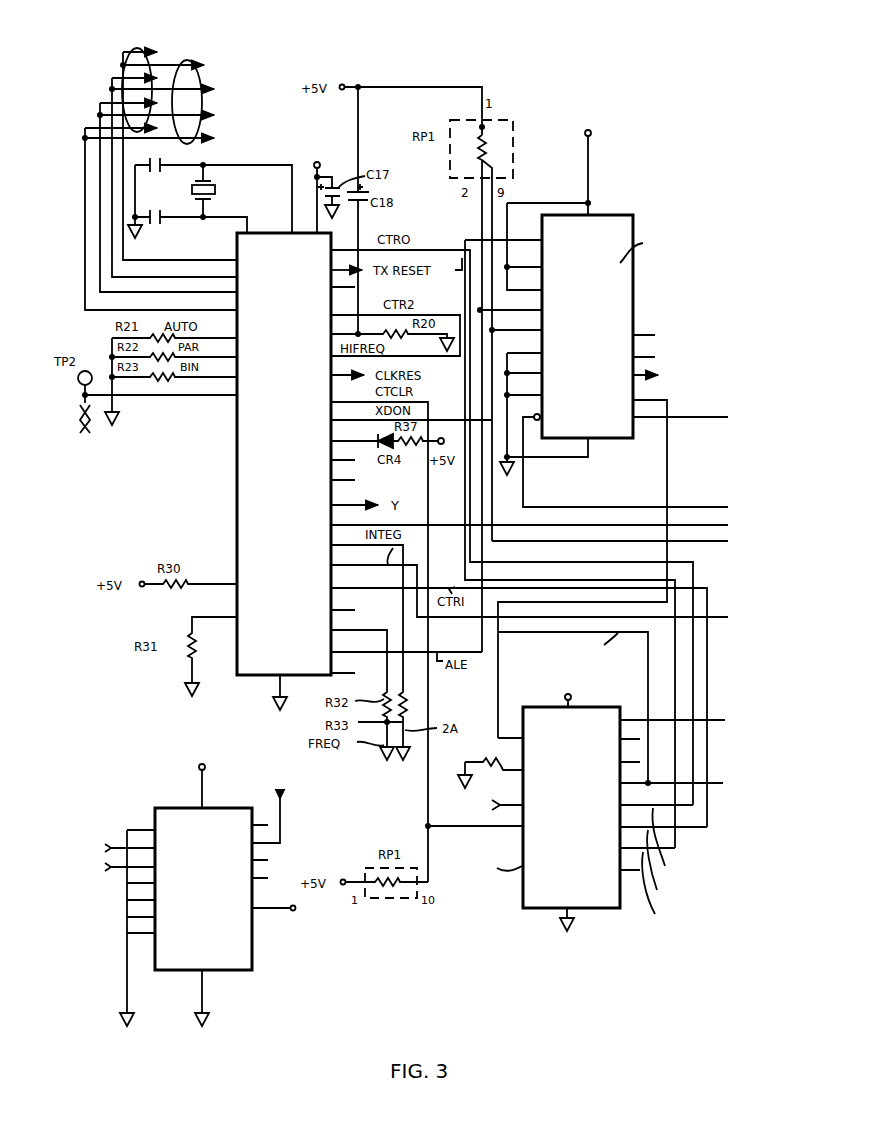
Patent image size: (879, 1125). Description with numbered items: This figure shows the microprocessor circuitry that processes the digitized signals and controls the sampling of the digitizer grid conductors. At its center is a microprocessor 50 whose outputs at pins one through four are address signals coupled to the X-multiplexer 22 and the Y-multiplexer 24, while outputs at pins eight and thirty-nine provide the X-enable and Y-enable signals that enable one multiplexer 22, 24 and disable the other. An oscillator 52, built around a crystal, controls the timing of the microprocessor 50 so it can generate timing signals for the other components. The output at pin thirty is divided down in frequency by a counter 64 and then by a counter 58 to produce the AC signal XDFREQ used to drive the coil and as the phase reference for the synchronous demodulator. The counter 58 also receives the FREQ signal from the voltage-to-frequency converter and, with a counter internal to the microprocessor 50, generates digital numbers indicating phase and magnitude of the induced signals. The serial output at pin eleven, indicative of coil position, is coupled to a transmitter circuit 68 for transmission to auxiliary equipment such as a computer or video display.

The X-multiplexer 22 is at (137, 48).
The Y-multiplexer 24 is at (187, 60).
The microprocessor 50 is at (291, 146).
The oscillator 52 is at (221, 148).
The counter 58 is at (492, 895).
The counter 64 is at (633, 153).
The transmitter circuit 68 is at (252, 982).